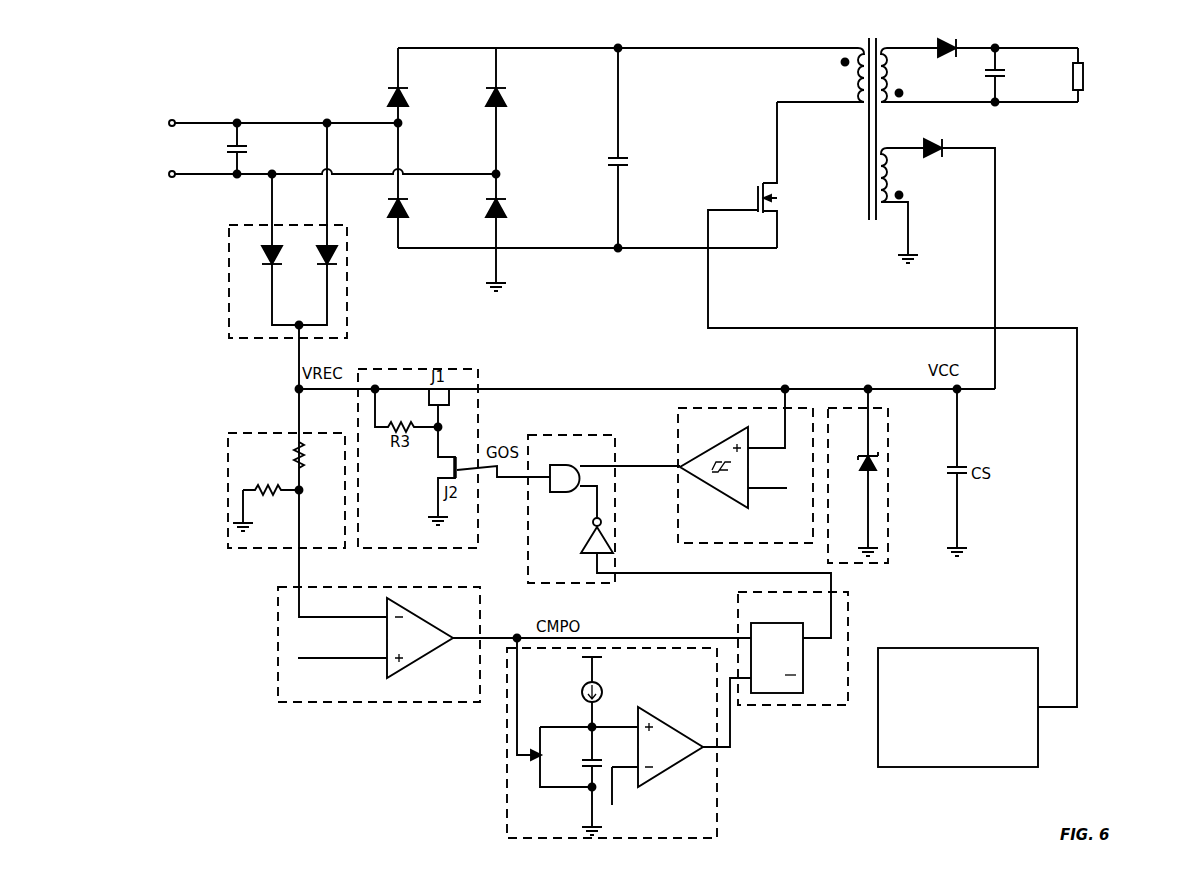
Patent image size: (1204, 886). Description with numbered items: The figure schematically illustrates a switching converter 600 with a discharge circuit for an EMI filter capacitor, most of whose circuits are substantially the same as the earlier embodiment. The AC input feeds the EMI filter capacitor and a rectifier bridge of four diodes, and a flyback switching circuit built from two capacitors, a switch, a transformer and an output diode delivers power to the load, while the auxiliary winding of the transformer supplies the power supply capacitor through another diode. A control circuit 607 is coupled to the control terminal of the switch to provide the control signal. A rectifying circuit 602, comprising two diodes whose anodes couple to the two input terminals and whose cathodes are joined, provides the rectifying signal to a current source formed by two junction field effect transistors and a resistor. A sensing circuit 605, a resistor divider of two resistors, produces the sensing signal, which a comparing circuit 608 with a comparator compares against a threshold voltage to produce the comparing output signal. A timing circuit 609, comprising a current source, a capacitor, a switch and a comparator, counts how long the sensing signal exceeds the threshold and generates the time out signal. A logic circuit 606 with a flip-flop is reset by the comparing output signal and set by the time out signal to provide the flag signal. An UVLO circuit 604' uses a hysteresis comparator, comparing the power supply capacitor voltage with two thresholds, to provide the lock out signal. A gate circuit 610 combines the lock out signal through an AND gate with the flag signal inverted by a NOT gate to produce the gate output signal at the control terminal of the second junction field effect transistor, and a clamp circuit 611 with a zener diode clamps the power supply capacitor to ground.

The switching converter 600 is at (1179, 33).
The rectifying circuit 602 is at (248, 339).
The UVLO circuit 604' is at (723, 466).
The sensing circuit 605 is at (228, 508).
The logic circuit 606 is at (780, 705).
The control circuit 607 is at (898, 768).
The comparing circuit 608 is at (319, 706).
The timing circuit 609 is at (507, 803).
The gate circuit 610 is at (528, 570).
The clamp circuit 611 is at (889, 540).